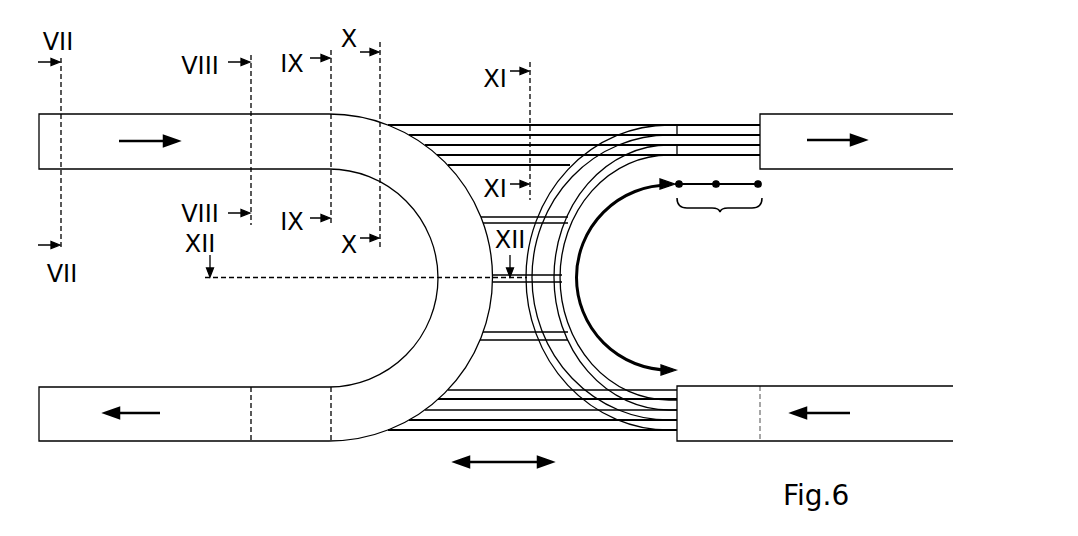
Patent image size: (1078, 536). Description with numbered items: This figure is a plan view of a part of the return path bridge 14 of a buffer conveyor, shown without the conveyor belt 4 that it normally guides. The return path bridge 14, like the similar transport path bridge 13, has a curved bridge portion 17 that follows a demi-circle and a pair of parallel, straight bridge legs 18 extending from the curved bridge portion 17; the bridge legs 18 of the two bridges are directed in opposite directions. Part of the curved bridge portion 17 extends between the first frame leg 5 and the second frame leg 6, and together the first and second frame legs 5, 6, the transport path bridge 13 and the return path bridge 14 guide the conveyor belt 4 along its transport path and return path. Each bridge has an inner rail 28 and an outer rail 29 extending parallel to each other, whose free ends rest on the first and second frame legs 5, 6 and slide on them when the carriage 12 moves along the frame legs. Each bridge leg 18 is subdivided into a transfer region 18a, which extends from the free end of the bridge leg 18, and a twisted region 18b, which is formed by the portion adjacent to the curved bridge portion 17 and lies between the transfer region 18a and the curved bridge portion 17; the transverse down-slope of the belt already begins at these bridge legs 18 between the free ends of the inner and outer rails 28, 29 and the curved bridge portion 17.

The conveyor belt 4 is at (228, 422).
The first frame leg 5 is at (432, 132).
The second frame leg 6 is at (563, 412).
The carriage 12 is at (532, 217).
The transport path bridge 13 is at (421, 417).
The return path bridge 14 is at (620, 417).
The curved bridge portion 17 is at (577, 268).
The bridge legs 18 is at (725, 137).
The transfer region 18a is at (732, 184).
The twisted region 18b is at (693, 184).
The inner rail 28 is at (637, 160).
The outer rail 29 is at (603, 147).